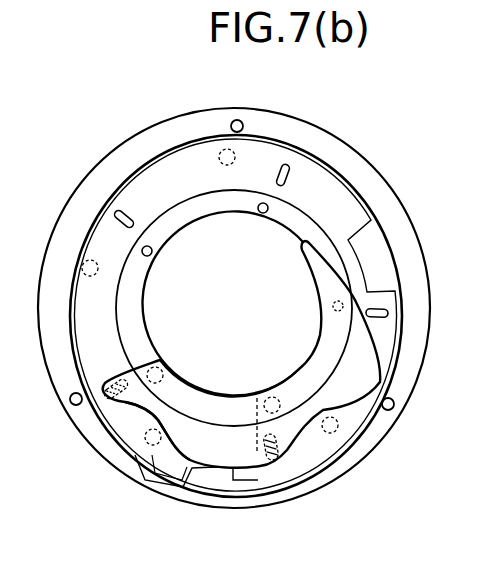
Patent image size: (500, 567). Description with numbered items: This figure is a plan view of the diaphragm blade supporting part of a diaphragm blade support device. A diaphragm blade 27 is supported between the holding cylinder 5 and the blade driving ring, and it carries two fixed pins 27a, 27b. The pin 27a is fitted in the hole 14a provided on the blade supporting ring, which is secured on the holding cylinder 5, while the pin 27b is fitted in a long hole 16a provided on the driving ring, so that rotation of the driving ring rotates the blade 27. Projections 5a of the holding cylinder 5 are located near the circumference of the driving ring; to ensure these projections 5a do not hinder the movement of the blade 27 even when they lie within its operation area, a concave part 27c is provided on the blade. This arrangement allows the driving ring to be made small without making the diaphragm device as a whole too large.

The holding cylinder 5 is at (413, 319).
The projection 5a is at (226, 151).
The hole 14a is at (152, 253).
The diaphragm blade 27 is at (215, 448).
The pin 27a is at (160, 374).
The pin 27b is at (98, 385).
The concave part 27c is at (147, 442).
The long hole 16a is at (107, 395).